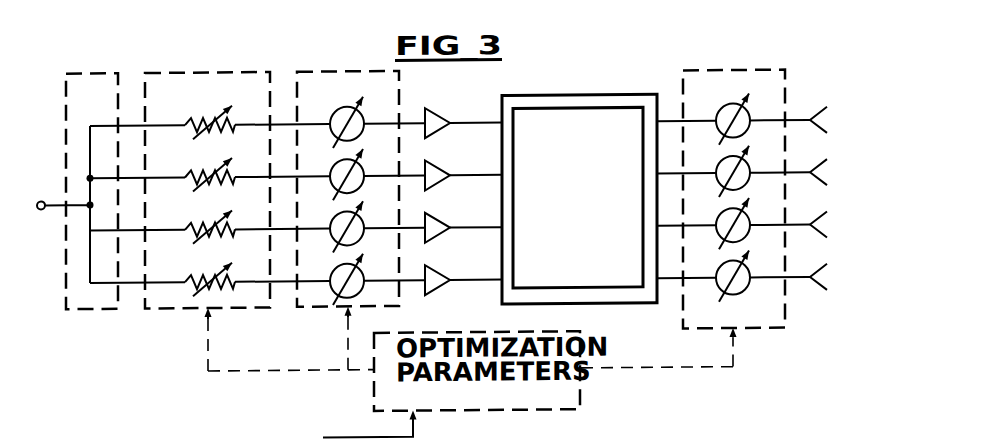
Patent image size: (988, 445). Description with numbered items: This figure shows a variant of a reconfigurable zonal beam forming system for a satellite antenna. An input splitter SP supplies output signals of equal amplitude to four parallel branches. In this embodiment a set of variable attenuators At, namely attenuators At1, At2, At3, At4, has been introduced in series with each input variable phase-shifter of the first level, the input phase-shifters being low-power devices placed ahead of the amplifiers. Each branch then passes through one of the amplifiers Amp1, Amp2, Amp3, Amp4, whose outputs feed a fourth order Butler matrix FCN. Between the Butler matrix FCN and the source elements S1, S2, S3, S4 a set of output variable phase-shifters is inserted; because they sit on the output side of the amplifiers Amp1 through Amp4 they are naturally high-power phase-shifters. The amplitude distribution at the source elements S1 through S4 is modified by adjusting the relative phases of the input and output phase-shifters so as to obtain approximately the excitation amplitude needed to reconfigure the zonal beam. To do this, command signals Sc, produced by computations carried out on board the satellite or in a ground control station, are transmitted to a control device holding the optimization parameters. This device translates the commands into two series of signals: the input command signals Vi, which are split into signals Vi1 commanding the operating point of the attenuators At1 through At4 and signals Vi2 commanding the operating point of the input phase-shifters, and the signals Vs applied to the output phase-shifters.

The input splitter SP is at (66, 82).
The variable attenuators At is at (153, 74).
The variable attenuator At1 is at (186, 121).
The variable attenuator At2 is at (188, 172).
The variable attenuator At3 is at (188, 224).
The variable attenuator At4 is at (188, 276).
The amplifier Amp1 is at (427, 111).
The amplifier Amp2 is at (427, 163).
The amplifier Amp3 is at (427, 215).
The amplifier Amp4 is at (427, 267).
The fourth order Butler matrix FCN is at (566, 99).
The source element S1 is at (826, 129).
The source element S2 is at (826, 181).
The source element S3 is at (826, 233).
The source element S4 is at (826, 286).
The command signals for the attenuators Vi1 is at (207, 345).
The command signals for the input phase-shifters Vi2 is at (347, 343).
The input command signals Vi is at (320, 375).
The output command signals Vs is at (710, 371).
The command signals Sc is at (352, 439).